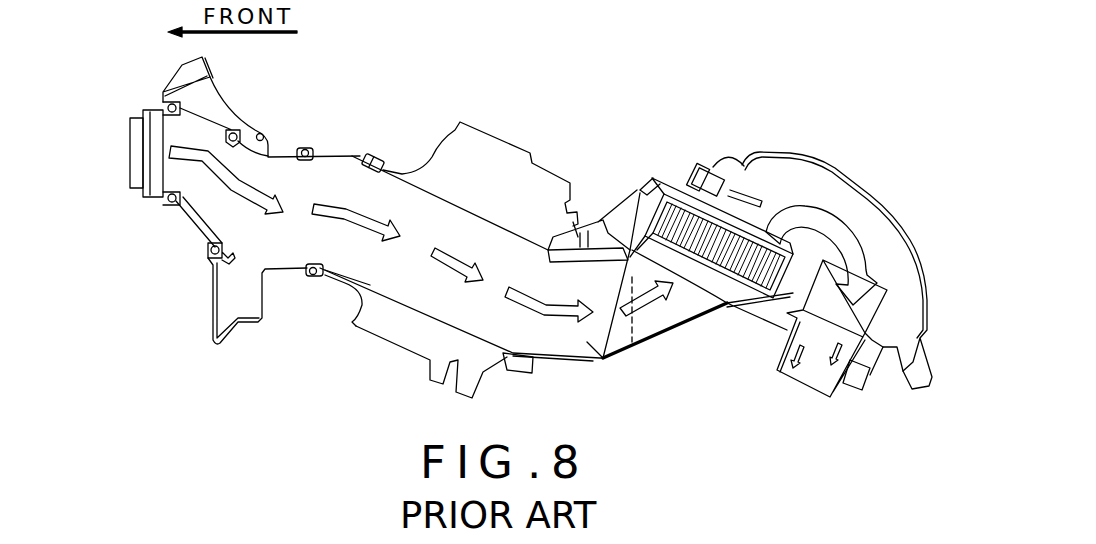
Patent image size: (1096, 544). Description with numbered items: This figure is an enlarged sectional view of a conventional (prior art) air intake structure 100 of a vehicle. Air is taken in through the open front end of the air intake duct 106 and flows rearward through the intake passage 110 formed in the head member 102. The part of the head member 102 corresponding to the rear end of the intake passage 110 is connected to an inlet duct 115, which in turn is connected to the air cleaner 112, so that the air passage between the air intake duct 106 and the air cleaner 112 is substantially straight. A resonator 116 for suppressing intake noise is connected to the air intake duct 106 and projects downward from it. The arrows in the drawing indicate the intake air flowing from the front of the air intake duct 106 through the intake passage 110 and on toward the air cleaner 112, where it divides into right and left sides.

The vehicle air conditioner unit (prior art) 100 is at (455, 46).
The head member 102 is at (503, 150).
The air intake duct 106 is at (197, 228).
The intake passage 110 is at (447, 297).
The air cleaner 112 is at (699, 100).
The inlet duct 115 is at (605, 360).
The resonator 116 is at (217, 342).